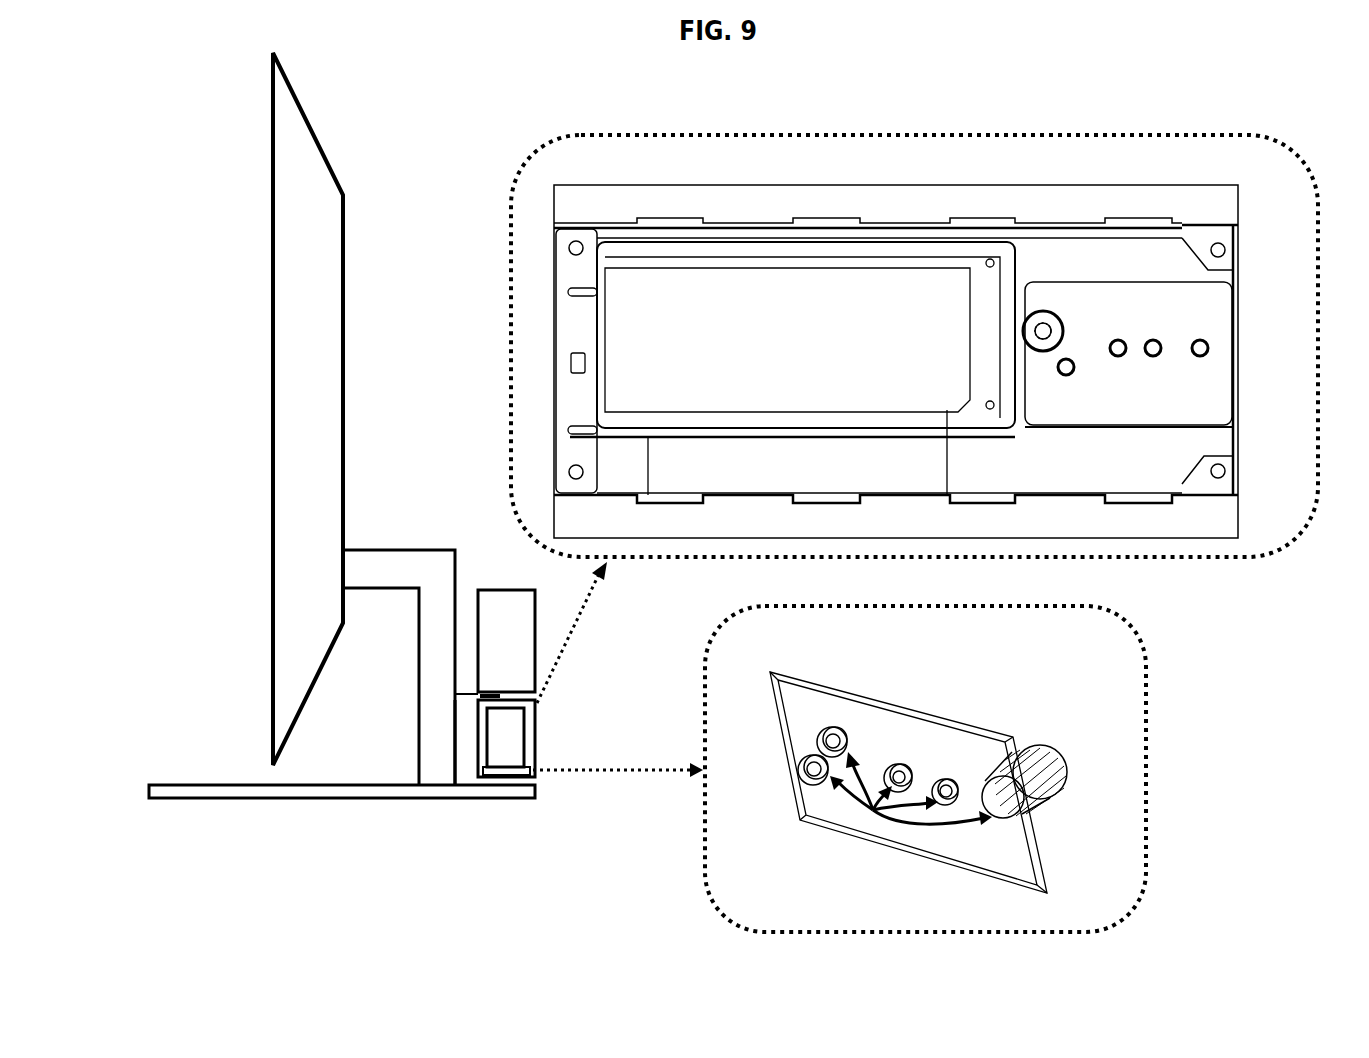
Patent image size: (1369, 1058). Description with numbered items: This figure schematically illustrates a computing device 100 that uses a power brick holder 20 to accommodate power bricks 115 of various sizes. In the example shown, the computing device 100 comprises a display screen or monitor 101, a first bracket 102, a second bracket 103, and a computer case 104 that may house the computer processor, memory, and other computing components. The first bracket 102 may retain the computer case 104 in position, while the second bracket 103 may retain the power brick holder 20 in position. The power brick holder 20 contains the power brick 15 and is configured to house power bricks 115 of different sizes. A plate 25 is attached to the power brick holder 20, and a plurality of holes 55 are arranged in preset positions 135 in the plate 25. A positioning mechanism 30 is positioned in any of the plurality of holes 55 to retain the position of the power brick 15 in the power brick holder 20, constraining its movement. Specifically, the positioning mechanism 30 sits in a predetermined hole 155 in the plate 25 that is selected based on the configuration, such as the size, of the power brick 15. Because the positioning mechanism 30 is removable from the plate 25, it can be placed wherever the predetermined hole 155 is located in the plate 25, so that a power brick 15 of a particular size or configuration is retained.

The computing device 100 is at (214, 394).
The display screen or monitor 101 is at (282, 692).
The first bracket 102 is at (474, 680).
The second bracket 103 is at (474, 722).
The computer case 104 is at (507, 603).
The power brick holder 20 is at (536, 725).
The power bricks of various sizes 115 is at (534, 742).
The plate 25 is at (517, 777).
The power brick 15 is at (698, 300).
The positioning mechanism 30 is at (1043, 311).
The predetermined hole 155 is at (1043, 352).
The plurality of holes 55 is at (832, 725).
The preset positions 135 is at (873, 812).